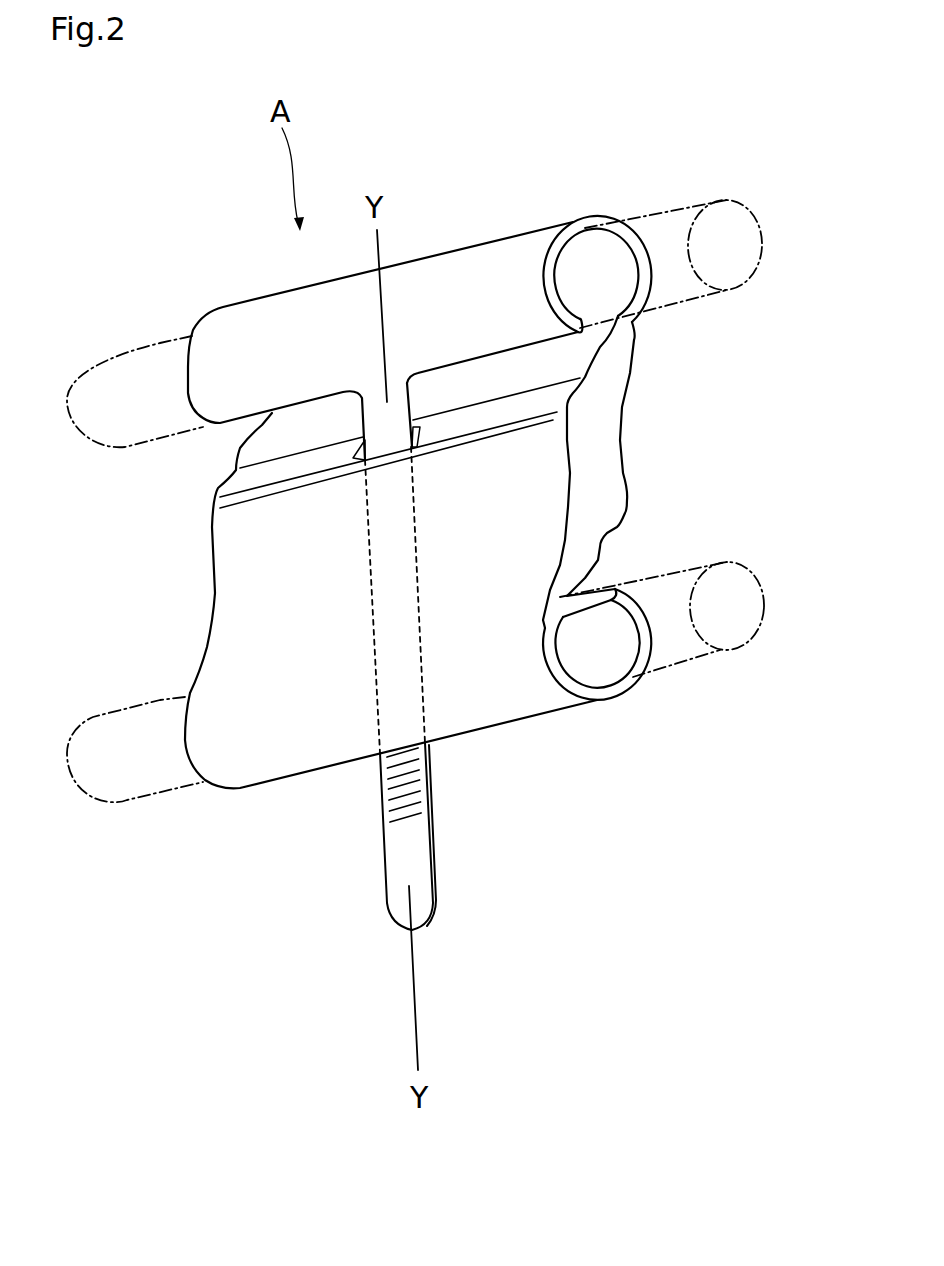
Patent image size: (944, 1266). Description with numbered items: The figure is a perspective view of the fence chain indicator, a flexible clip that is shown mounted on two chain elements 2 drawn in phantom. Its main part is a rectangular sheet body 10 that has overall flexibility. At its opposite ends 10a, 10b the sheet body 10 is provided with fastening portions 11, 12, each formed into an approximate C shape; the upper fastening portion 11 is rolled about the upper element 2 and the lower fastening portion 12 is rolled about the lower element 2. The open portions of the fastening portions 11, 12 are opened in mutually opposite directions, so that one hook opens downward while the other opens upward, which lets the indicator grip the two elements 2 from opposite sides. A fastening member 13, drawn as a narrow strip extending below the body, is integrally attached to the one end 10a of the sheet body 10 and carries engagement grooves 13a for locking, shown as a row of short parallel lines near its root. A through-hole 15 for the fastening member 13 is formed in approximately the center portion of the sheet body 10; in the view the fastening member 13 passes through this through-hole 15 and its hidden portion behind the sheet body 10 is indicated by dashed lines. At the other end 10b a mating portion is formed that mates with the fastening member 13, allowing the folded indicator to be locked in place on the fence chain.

The pipe 2 is at (675, 222).
The sheet body 10 is at (612, 469).
The one end of the sheet body 10a is at (585, 330).
The other end of the sheet body 10b is at (580, 597).
The fastening portion 11 is at (487, 277).
The fastening portion 12 is at (491, 728).
The fastening member 13 is at (400, 847).
The engagement grooves 13a is at (383, 792).
The through-hole 15 is at (352, 440).